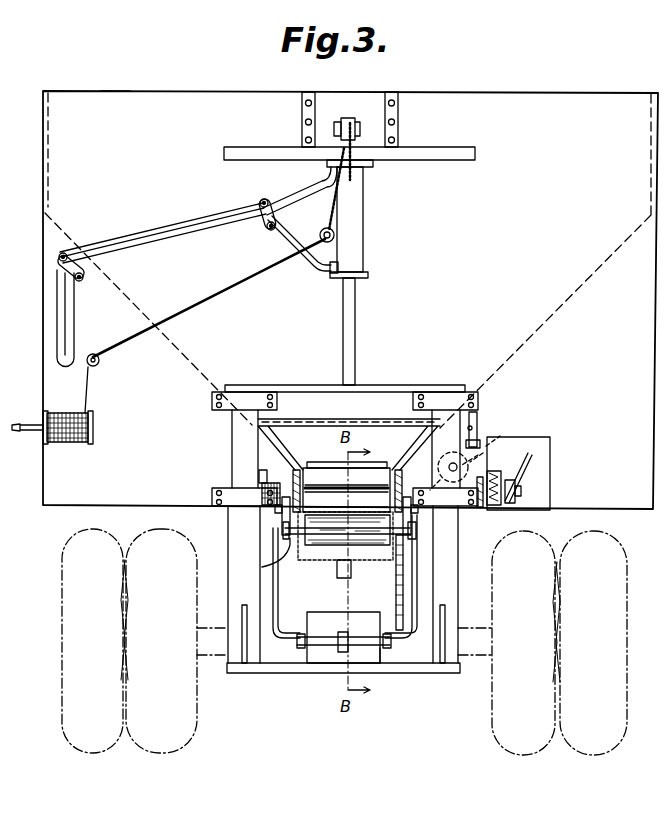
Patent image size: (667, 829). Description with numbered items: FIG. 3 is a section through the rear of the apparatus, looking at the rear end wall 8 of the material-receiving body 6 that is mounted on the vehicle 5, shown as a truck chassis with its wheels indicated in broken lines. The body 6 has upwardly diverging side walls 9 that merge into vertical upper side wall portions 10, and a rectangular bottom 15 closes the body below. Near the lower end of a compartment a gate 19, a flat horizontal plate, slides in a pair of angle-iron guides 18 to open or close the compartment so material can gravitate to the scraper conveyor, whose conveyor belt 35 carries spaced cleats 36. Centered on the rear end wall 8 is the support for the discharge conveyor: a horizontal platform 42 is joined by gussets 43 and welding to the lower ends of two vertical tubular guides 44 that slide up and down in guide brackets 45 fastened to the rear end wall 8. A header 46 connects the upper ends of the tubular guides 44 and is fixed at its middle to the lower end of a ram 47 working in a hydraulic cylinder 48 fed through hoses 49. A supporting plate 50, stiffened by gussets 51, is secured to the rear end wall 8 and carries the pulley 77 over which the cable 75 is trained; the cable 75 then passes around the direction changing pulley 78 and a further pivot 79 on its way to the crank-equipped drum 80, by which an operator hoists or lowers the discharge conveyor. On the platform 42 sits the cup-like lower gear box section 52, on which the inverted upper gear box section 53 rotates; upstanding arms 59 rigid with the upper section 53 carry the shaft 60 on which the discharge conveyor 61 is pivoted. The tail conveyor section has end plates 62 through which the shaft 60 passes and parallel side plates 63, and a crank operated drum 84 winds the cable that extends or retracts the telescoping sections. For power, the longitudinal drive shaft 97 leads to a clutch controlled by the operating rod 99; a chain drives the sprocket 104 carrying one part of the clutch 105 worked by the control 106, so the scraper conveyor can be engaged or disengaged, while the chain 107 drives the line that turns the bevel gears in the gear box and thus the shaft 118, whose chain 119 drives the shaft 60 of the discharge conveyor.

The vehicle 5 is at (82, 533).
The material-receiving body 6 is at (119, 89).
The rear end wall 8 is at (189, 91).
The side walls 9 is at (216, 390).
The vertical upper side wall portions 10 is at (50, 168).
The rectangular bottom 15 is at (532, 510).
The guides 18 is at (330, 419).
The gate 19 is at (296, 428).
The conveyor belt 35 is at (381, 470).
The cleats 36 is at (327, 457).
The platform 42 is at (293, 674).
The gussets 43 is at (242, 618).
The tubular guides 44 is at (230, 548).
The guide brackets 45 is at (235, 490).
The header 46 is at (306, 381).
The ram 47 is at (355, 338).
The hydraulic cylinder 48 is at (364, 236).
The hoses 49 is at (310, 184).
The supporting plate 50 is at (252, 161).
The gussets 51 is at (384, 112).
The lower gear box section 52 is at (381, 655).
The upper gear box section 53 is at (363, 618).
The upstanding arms 59 is at (280, 597).
The shaft 60 is at (261, 558).
The discharge conveyor 61 is at (321, 567).
The end plates 62 is at (282, 518).
The side plates 63 is at (292, 480).
The cable 75 is at (352, 176).
The pulley 77 is at (360, 128).
The direction changing pulley 78 is at (302, 217).
The pivot 79 is at (99, 364).
The drum 80 is at (90, 438).
The crank operated drum 84 is at (262, 488).
The drive shaft 97 is at (483, 453).
The operating rod 99 is at (478, 415).
The sprocket 104 is at (500, 479).
The clutch 105 is at (527, 462).
The control 106 is at (516, 479).
The chain 107 is at (440, 480).
The shaft 118 is at (390, 635).
The chain 119 is at (398, 578).